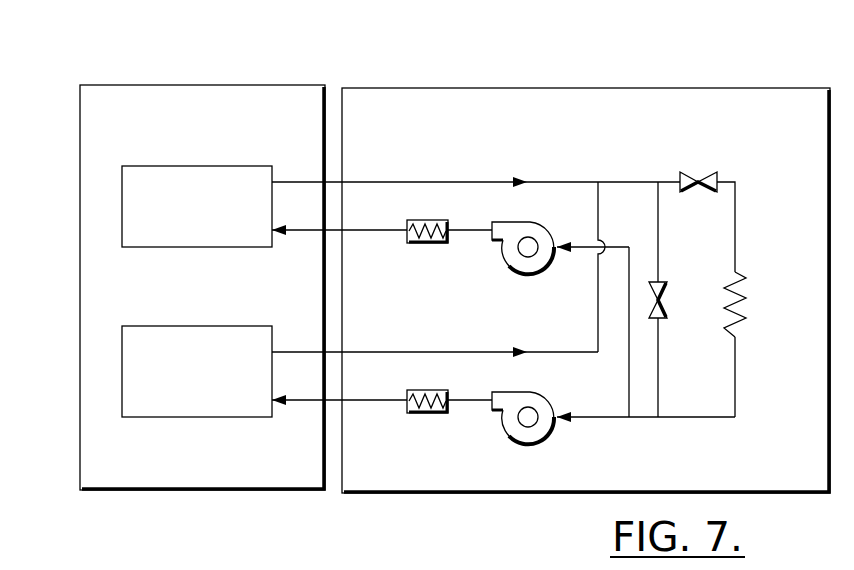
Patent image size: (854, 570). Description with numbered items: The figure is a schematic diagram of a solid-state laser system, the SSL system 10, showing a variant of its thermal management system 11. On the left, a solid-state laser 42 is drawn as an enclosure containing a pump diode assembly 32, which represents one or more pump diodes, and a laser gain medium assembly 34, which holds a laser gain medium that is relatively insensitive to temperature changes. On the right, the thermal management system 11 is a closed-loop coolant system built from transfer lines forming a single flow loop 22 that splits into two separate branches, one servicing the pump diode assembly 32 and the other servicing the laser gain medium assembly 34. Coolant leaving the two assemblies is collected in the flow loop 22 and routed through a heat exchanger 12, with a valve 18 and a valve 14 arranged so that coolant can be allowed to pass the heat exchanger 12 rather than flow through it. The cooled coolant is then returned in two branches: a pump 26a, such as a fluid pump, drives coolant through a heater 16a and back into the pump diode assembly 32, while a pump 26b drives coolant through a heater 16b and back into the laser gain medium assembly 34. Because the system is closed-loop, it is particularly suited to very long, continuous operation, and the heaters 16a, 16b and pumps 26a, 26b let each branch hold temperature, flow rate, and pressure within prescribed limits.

The SSL system 10 is at (458, 55).
The thermal management system 11 is at (657, 88).
The solid-state laser 42 is at (80, 157).
The pump diode assembly 32 is at (201, 165).
The laser gain medium assembly 34 is at (222, 417).
The flow loop 22 is at (622, 171).
The valve 18 is at (697, 180).
The valve 14 is at (660, 283).
The heat exchanger 12 is at (750, 305).
The heater 16a is at (428, 245).
The heater 16b is at (427, 415).
The pump 26a is at (522, 277).
The pump 26b is at (553, 438).